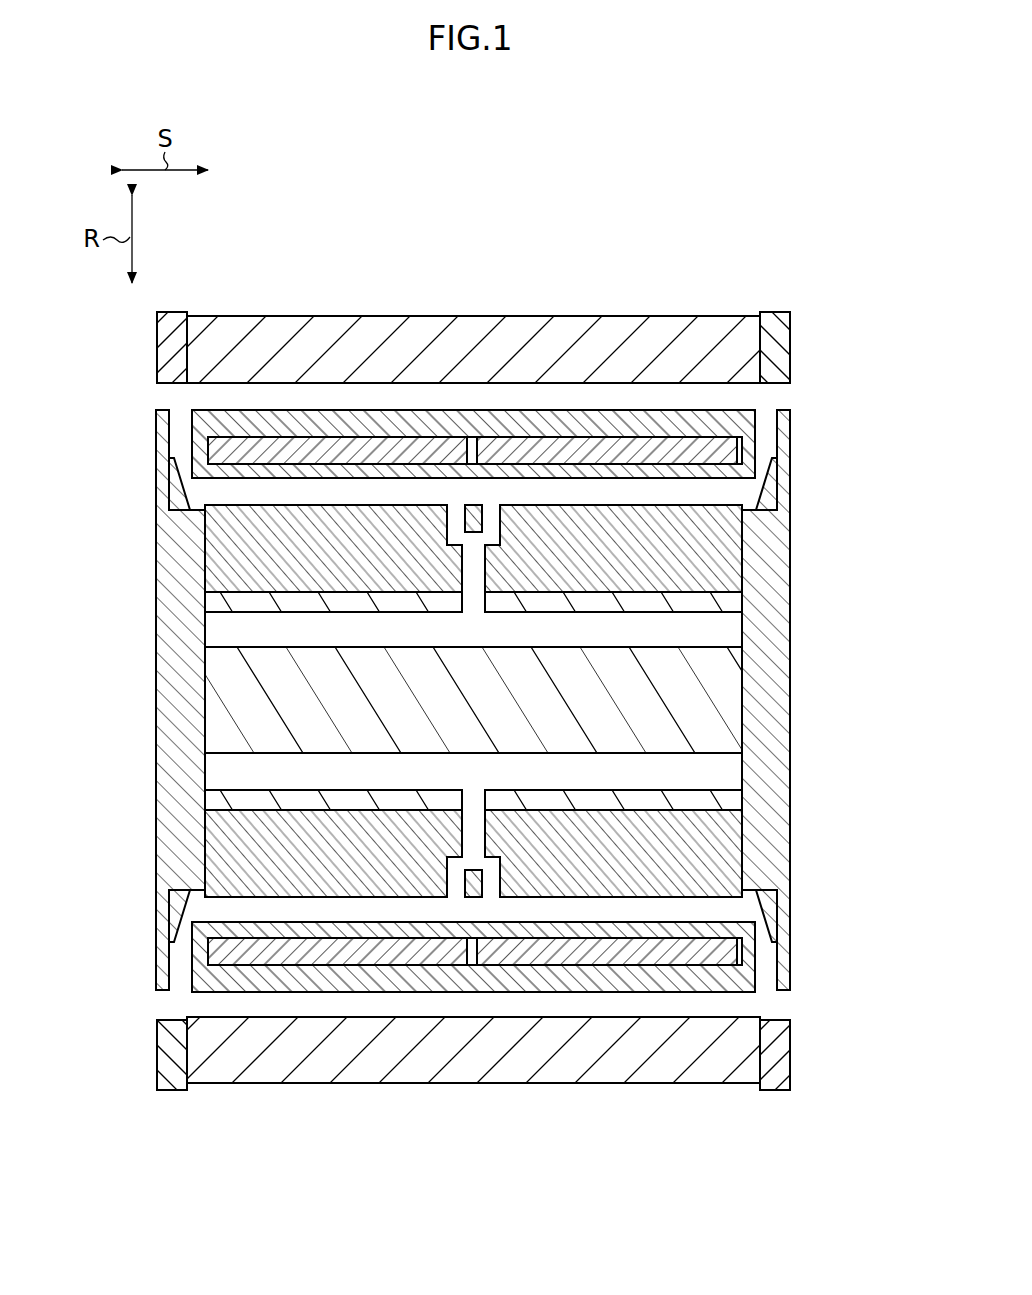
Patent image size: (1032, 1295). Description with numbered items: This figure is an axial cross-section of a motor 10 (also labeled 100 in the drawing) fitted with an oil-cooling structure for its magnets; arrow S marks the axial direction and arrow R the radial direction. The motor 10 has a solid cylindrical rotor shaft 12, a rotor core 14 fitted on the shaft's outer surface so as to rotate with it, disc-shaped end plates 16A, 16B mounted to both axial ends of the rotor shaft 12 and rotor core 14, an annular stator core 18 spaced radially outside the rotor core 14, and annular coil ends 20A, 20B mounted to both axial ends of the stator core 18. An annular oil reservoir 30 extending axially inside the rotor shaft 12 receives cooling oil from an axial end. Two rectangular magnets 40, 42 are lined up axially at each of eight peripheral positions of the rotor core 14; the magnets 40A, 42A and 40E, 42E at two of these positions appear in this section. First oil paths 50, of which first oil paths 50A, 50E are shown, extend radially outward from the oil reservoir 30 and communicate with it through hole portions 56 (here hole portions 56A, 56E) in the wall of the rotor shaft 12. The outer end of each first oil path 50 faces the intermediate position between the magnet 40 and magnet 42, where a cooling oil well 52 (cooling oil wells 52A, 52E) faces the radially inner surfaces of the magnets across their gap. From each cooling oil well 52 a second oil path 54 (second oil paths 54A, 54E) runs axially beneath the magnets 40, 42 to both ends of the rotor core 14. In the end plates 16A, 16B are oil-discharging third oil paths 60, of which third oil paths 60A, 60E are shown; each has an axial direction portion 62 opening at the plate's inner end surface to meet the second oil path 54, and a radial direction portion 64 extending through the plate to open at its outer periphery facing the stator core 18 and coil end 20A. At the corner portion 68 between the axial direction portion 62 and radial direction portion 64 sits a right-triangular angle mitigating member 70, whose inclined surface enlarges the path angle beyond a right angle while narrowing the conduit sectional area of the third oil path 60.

The motor 10 is at (664, 252).
The stator 100 is at (473, 701).
The rotor shaft 12 is at (203, 690).
The rotor core 14 is at (440, 410).
The end plate 16A is at (154, 630).
The end plate 16B is at (792, 630).
The stator core 18 is at (274, 316).
The coil end 20A is at (176, 312).
The coil end 20B is at (771, 312).
The oil reservoir 30 is at (205, 772).
The magnet 40 is at (473, 701).
The magnet 40A is at (365, 430).
The magnet 40E is at (352, 966).
The magnet 42 is at (607, 701).
The magnet 42A is at (560, 435).
The magnet 42E is at (619, 966).
The first oil path 50 is at (340, 701).
The first oil path 50A is at (456, 550).
The first oil path 50E is at (476, 833).
The cooling oil well 52 is at (505, 701).
The cooling oil well 52A is at (496, 505).
The cooling oil well 52E is at (490, 882).
The second oil path 54 is at (337, 599).
The second oil path 54A is at (250, 487).
The second oil path 54E is at (278, 906).
The hole portion 56 is at (607, 701).
The hole portion 56A is at (472, 612).
The hole portion 56E is at (478, 800).
The third oil path 60 is at (474, 699).
The third oil path 60A is at (180, 443).
The third oil path 60E is at (180, 949).
The axial direction portion 62 is at (205, 535).
The radial direction portion 64 is at (160, 415).
The corner portion 68 is at (190, 510).
The angle mitigating member 70 is at (170, 480).